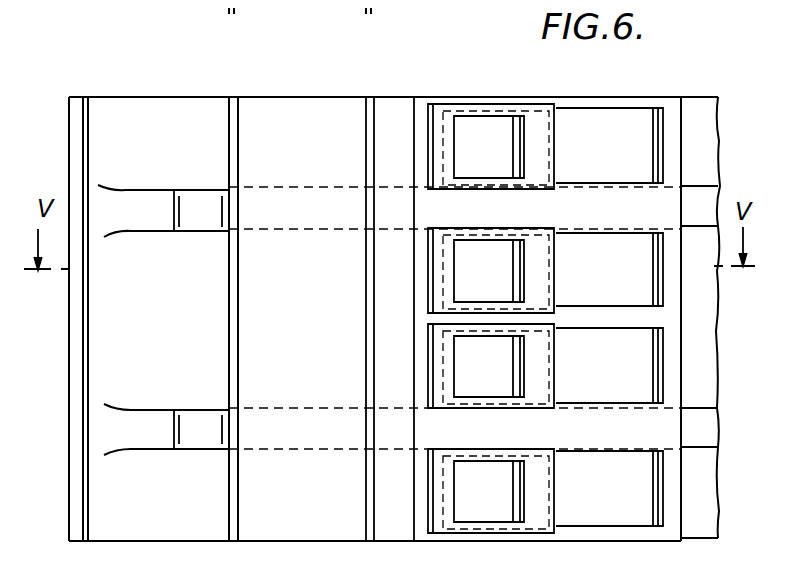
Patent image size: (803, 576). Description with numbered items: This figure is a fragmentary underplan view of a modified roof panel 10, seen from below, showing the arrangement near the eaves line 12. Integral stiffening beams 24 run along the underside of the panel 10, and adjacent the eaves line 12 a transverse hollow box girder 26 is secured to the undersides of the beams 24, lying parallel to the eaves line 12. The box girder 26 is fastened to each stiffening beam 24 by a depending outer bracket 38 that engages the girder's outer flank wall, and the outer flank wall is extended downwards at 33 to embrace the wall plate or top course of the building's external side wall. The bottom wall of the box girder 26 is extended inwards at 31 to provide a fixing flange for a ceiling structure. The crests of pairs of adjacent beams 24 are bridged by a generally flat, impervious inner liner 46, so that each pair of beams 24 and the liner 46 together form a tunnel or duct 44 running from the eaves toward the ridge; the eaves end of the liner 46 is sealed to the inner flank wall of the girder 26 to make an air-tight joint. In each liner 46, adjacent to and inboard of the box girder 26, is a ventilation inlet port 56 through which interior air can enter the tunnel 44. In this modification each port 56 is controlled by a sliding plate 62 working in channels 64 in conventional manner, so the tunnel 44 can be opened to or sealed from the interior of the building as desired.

The panel 10 is at (721, 88).
The eaves line 12 is at (72, 94).
The stiffening beams 24 is at (136, 205).
The transverse hollow box girder 26 is at (228, 322).
The fixing flange 31 is at (408, 118).
The extension of outer flank wall 33 is at (228, 10).
The outer bracket 38 is at (193, 206).
The tunnel or duct 44 is at (690, 157).
The inner liner 46 is at (684, 108).
The ventilation inlet port 56 is at (455, 132).
The sliding plate 62 is at (641, 168).
The channels 64 is at (492, 122).